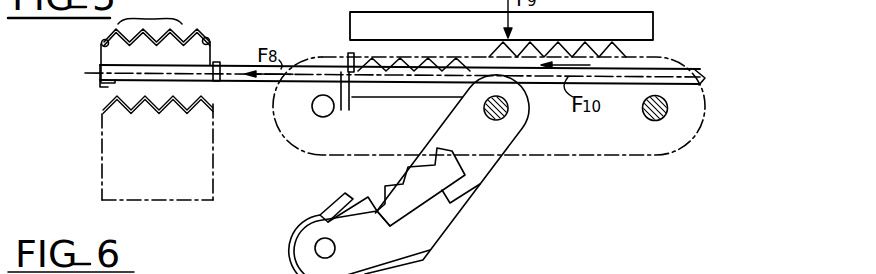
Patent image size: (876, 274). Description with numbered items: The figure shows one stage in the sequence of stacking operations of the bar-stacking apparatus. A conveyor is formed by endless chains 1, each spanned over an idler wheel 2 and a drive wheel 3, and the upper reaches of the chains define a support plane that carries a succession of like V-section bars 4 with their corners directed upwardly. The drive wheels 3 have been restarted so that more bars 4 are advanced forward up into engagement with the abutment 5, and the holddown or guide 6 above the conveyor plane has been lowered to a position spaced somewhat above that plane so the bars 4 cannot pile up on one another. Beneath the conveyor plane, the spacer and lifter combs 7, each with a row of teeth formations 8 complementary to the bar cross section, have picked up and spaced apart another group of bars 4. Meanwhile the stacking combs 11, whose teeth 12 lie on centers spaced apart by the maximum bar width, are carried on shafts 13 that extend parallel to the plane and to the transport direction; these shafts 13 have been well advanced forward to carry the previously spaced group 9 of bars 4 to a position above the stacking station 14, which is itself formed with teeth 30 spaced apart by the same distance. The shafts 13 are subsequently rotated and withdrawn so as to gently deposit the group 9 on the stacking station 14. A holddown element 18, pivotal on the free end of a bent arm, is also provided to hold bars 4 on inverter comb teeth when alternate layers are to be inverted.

The endless chain 1 is at (663, 60).
The idler wheel 2 is at (284, 137).
The drive wheel 3 is at (663, 116).
The V-section bar 4 is at (186, 30).
The abutment 5 is at (348, 53).
The holddown or guide 6 is at (382, 55).
The spacer and lifter comb 7 is at (382, 92).
The teeth formations 8 is at (446, 62).
The group of bars 9 is at (150, 12).
The stacking comb 11 is at (192, 58).
The teeth 12 is at (100, 46).
The shaft 13 is at (115, 85).
The stacking station 14 is at (115, 172).
The holddown element 18 is at (330, 210).
The teeth 30 is at (114, 113).